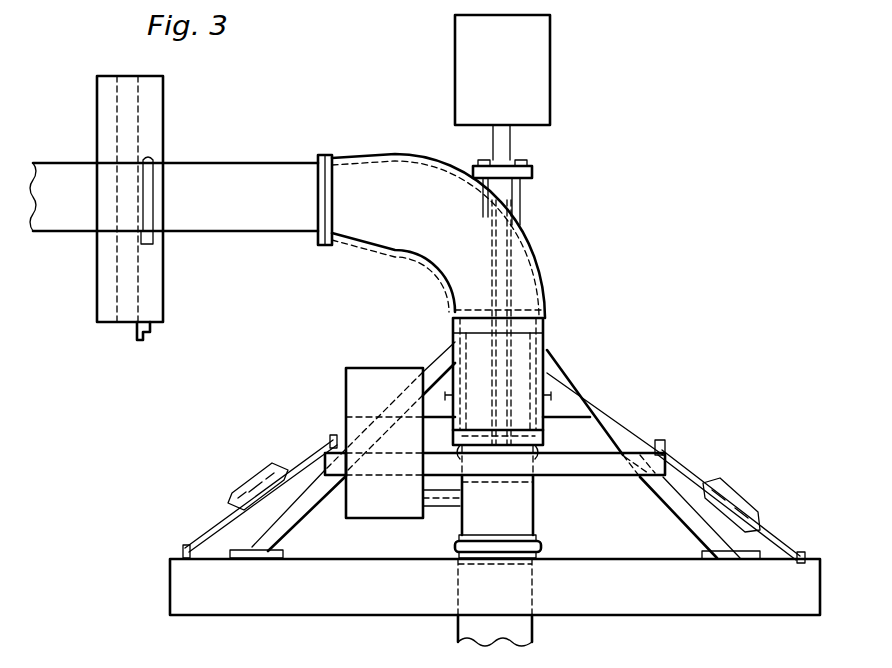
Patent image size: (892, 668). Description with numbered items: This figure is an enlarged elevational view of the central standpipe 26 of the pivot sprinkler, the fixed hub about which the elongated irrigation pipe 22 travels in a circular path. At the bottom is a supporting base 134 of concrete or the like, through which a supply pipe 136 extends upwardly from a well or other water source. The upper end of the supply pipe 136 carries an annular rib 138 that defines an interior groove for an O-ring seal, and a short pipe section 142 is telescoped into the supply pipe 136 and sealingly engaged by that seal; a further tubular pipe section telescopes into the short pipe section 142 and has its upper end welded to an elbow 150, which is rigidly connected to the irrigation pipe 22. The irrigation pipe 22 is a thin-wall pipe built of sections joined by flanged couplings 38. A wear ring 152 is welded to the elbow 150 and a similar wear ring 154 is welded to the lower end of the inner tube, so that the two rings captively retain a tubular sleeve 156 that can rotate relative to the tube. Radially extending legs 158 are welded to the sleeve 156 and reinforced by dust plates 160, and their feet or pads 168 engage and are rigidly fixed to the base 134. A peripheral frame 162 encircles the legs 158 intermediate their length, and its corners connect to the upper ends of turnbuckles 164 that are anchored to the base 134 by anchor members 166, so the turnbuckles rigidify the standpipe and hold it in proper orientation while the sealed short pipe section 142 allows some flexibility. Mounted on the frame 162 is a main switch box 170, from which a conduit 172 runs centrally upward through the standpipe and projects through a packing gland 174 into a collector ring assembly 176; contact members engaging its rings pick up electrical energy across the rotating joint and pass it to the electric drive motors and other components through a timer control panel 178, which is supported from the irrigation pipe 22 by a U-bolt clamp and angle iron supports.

The irrigation pipe 22 is at (203, 178).
The central standpipe 26 is at (623, 418).
The flanged coupling 38 is at (322, 155).
The supporting base 134 is at (782, 603).
The supply pipe 136 is at (512, 627).
The annular rib 138 is at (572, 543).
The short pipe section 142 is at (515, 504).
The elbow 150 is at (397, 156).
The wear ring 152 is at (545, 325).
The wear ring 154 is at (525, 440).
The tubular sleeve 156 is at (516, 360).
The radially extending legs 158 is at (623, 438).
The dust plates 160 is at (553, 405).
The peripheral frame 162 is at (622, 465).
The turnbuckles 164 is at (733, 495).
The anchor members 166 is at (802, 555).
The feet or pads 168 is at (718, 562).
The main switch box 170 is at (375, 378).
The conduit 172 is at (440, 506).
The packing gland 174 is at (510, 168).
The collector ring assembly 176 is at (527, 87).
The timer control panel 178 is at (145, 273).